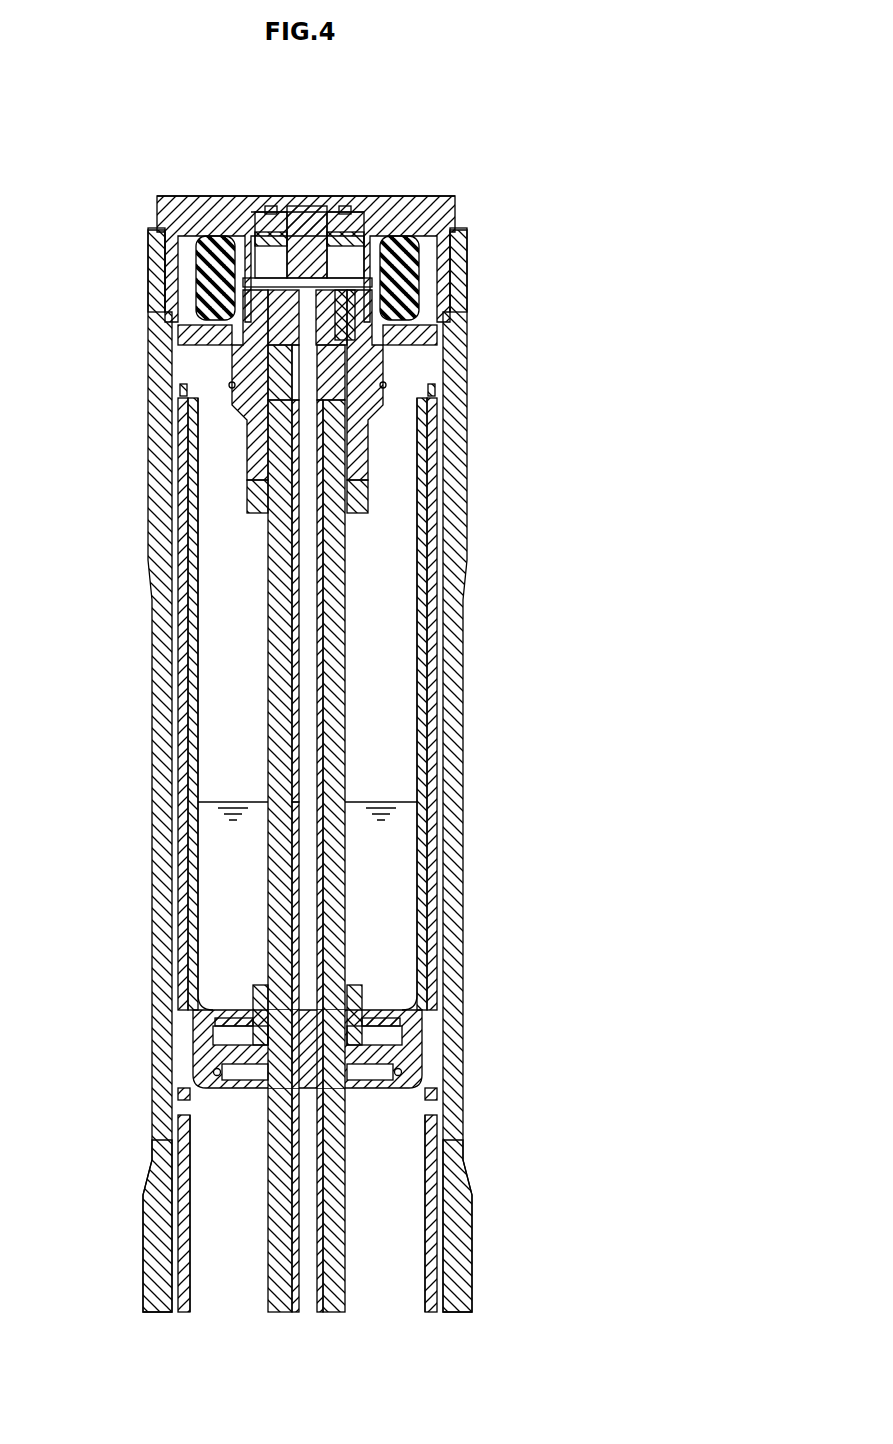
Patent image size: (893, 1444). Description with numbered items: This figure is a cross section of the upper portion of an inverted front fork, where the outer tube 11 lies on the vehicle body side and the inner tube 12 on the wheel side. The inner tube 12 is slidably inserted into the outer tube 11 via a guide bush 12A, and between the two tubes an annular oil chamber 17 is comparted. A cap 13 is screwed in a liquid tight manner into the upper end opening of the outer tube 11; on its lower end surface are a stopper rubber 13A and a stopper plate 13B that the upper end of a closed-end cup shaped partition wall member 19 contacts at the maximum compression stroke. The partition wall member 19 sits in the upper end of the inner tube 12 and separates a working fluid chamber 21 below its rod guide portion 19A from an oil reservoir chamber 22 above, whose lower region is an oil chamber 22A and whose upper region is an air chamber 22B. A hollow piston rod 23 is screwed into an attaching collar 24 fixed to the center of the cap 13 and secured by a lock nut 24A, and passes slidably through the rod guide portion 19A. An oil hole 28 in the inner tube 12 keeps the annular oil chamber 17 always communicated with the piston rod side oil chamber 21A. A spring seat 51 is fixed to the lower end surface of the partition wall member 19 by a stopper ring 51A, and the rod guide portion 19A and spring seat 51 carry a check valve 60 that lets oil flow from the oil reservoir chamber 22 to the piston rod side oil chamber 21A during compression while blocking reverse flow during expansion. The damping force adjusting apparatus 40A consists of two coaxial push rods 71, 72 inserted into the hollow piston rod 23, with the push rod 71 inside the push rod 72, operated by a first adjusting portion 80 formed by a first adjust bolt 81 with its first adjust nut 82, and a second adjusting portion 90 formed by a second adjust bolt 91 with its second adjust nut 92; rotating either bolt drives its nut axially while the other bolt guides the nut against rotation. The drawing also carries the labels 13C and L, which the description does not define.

The damping force adjusting apparatus 40A is at (447, 165).
The outer tube 11 is at (162, 680).
The inner tube 12 is at (185, 733).
The guide bush 12A is at (195, 600).
The cap 13 is at (178, 212).
The stopper rubber 13A is at (195, 292).
The stopper plate 13B is at (215, 327).
The seal ring 13C is at (208, 373).
The annular oil chamber 17 is at (165, 1155).
The partition wall member 19 is at (185, 638).
The rod guide portion 19A is at (215, 1030).
The working fluid chamber 21 is at (222, 1213).
The piston rod side oil chamber 21A is at (222, 1255).
The oil reservoir chamber 22 is at (222, 530).
The oil chamber 22A is at (222, 853).
The air chamber 22B is at (222, 567).
The piston rod 23 is at (335, 580).
The attaching collar 24 is at (255, 440).
The lock nut 24A is at (250, 490).
The oil hole 28 is at (185, 1098).
The spring seat 51 is at (220, 1050).
The stopper ring 51A is at (213, 1073).
The check valve 60 is at (240, 997).
The push rod 71 is at (350, 310).
The push rod 72 is at (420, 410).
The first adjusting portion 80 is at (345, 207).
The first adjust bolt 81 is at (307, 242).
The first adjust nut 82 is at (420, 270).
The second adjusting portion 90 is at (262, 207).
The second adjust bolt 91 is at (309, 239).
The second adjust nut 92 is at (350, 345).
The liquid level L is at (240, 800).